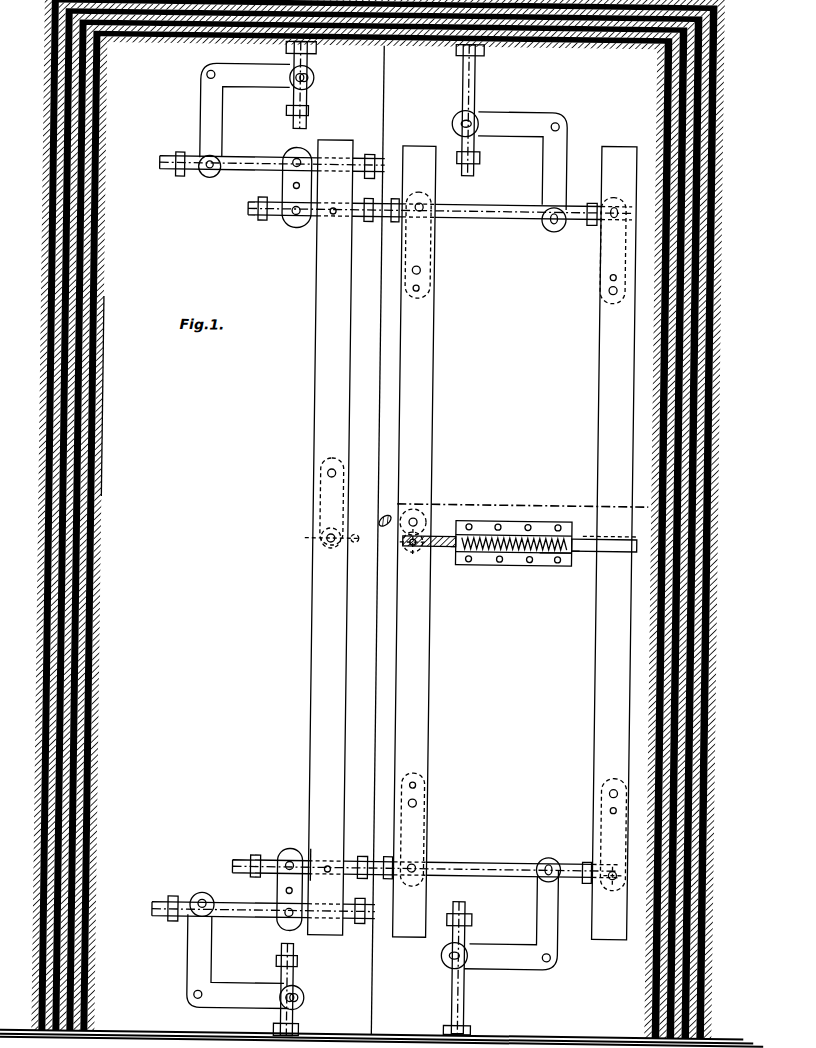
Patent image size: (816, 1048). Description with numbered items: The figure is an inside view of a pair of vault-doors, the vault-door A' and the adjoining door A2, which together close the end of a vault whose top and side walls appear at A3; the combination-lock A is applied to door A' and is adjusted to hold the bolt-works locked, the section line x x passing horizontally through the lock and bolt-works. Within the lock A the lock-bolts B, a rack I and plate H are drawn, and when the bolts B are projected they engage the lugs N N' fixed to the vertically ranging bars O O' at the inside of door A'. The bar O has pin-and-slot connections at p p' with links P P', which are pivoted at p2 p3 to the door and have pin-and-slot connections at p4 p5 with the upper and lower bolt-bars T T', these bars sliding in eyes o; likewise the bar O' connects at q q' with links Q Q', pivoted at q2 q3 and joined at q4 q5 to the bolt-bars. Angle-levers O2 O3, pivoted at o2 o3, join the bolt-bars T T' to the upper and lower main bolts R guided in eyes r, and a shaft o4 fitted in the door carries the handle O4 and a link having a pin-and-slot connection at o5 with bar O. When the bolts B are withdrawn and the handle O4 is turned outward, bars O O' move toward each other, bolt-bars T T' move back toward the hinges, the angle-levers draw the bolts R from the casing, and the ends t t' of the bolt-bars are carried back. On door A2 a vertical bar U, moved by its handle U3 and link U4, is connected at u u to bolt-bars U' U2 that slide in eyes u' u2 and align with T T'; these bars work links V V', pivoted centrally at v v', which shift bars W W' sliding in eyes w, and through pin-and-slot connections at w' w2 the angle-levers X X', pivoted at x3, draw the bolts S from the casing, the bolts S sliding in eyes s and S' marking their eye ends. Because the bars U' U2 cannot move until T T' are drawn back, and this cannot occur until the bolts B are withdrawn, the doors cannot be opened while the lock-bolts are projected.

The lock A is at (513, 556).
The vault-door A' is at (445, 541).
The adjoining door A2 is at (167, 397).
The top and side walls of the vault A3 is at (718, 462).
The lock-bolts B is at (440, 537).
The rack I is at (514, 534).
The plate H is at (554, 559).
The lug N is at (447, 560).
The lug N' is at (583, 564).
The bar O is at (414, 541).
The bar O' is at (614, 543).
The angle-lever O2 is at (509, 171).
The angle-lever O3 is at (500, 913).
The handle O4 is at (384, 527).
The eyes o is at (593, 203).
The pivot o2 is at (559, 127).
The pivot o3 is at (550, 961).
The shaft o4 is at (413, 553).
The pin-and-slot connection o5 is at (417, 521).
The link P is at (418, 245).
The link P' is at (412, 829).
The pin-and-slot connection p is at (431, 269).
The pivot p2 is at (421, 291).
The pivot p3 is at (414, 787).
The pin-and-slot connection p4 is at (424, 207).
The pin-and-slot connection p5 is at (415, 868).
The pin-and-slot connection p' is at (431, 805).
The link Q is at (613, 251).
The link Q' is at (613, 835).
The pin-and-slot connection q is at (596, 295).
The pivot q2 is at (612, 277).
The pivot q3 is at (609, 810).
The pin-and-slot connection q4 is at (618, 210).
The pin-and-slot connection q5 is at (612, 879).
The pin-and-slot connection q' is at (596, 790).
The main bolt R is at (474, 97).
The eyes r is at (455, 55).
The bolt S is at (304, 538).
The rod eye S' is at (302, 537).
The eyes s is at (286, 110).
The upper bolt-bar T is at (440, 222).
The lower bolt-bar T' is at (424, 860).
The end of bolt-bar t is at (392, 221).
The end of bolt-bar t' is at (386, 858).
The bar U is at (330, 537).
The lower bolt-bar U2 is at (305, 843).
The handle U3 is at (322, 545).
The link U4 is at (320, 500).
The connection u is at (329, 540).
The eyes u' is at (306, 220).
The eyes u2 is at (255, 855).
The link V is at (286, 187).
The link V' is at (278, 889).
The pivot v is at (296, 176).
The pivot v' is at (291, 896).
The bar W is at (272, 155).
The bar W' is at (263, 921).
The eyes w is at (264, 537).
The pin-and-slot connection w' is at (203, 174).
The pin-and-slot connection w2 is at (204, 893).
The angle-lever X is at (245, 110).
The angle-lever X' is at (238, 961).
The section line x is at (515, 509).
The pivot x3 is at (206, 75).